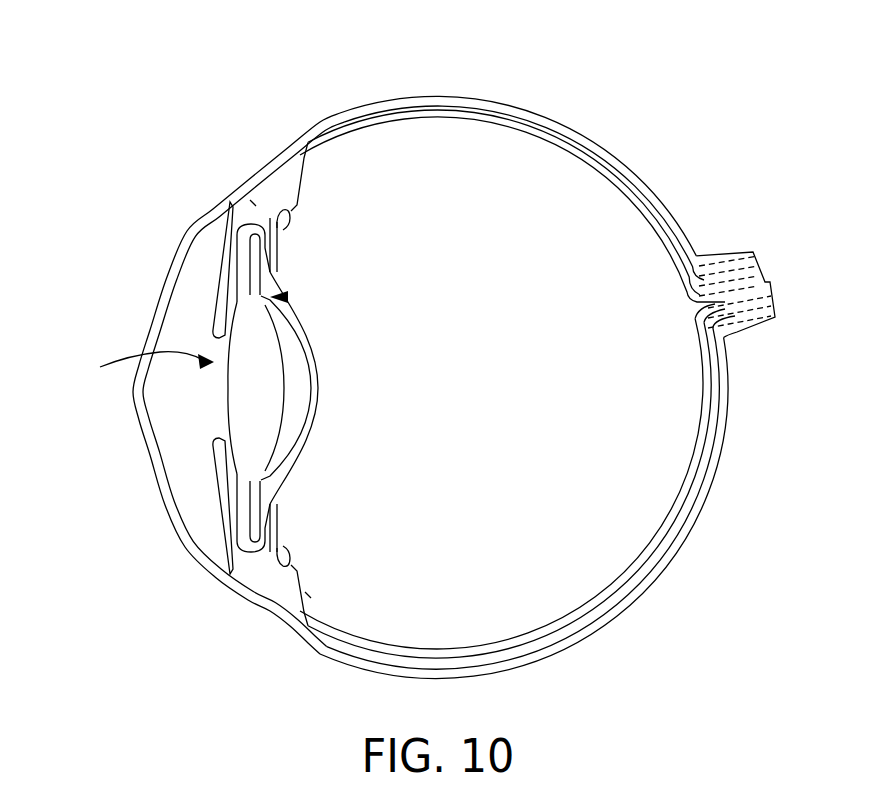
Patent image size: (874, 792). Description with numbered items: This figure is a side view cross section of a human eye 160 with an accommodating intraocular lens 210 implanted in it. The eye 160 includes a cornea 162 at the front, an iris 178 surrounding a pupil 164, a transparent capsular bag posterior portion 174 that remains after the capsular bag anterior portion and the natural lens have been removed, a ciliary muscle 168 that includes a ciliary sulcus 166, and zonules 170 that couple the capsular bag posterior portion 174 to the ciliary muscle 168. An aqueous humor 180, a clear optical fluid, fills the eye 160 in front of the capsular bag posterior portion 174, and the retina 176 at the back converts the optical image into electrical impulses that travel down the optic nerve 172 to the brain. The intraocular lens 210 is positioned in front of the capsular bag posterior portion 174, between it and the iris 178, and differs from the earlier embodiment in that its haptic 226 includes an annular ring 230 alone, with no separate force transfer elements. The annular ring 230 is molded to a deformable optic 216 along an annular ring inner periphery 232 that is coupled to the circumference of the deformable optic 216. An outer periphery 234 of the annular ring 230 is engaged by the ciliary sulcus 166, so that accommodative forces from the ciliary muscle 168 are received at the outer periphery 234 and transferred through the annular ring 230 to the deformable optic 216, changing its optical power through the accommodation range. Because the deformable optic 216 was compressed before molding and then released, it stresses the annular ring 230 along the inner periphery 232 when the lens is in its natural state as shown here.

The eye 160 is at (560, 92).
The cornea 162 is at (152, 275).
The pupil 164 is at (162, 332).
The ciliary sulcus 166 is at (262, 222).
The ciliary muscle 168 is at (252, 200).
The zonules 170 is at (285, 229).
The optic nerve 172 is at (738, 275).
The capsular bag posterior portion 174 is at (320, 362).
The retina 176 is at (700, 425).
The iris 178 is at (230, 245).
The aqueous humor 180 is at (163, 412).
The intraocular lens 210 is at (137, 362).
The deformable optic 216 is at (242, 403).
The haptic 226 is at (288, 297).
The annular ring 230 is at (243, 287).
The annular ring inner periphery 232 is at (261, 296).
The outer periphery 234 is at (271, 252).